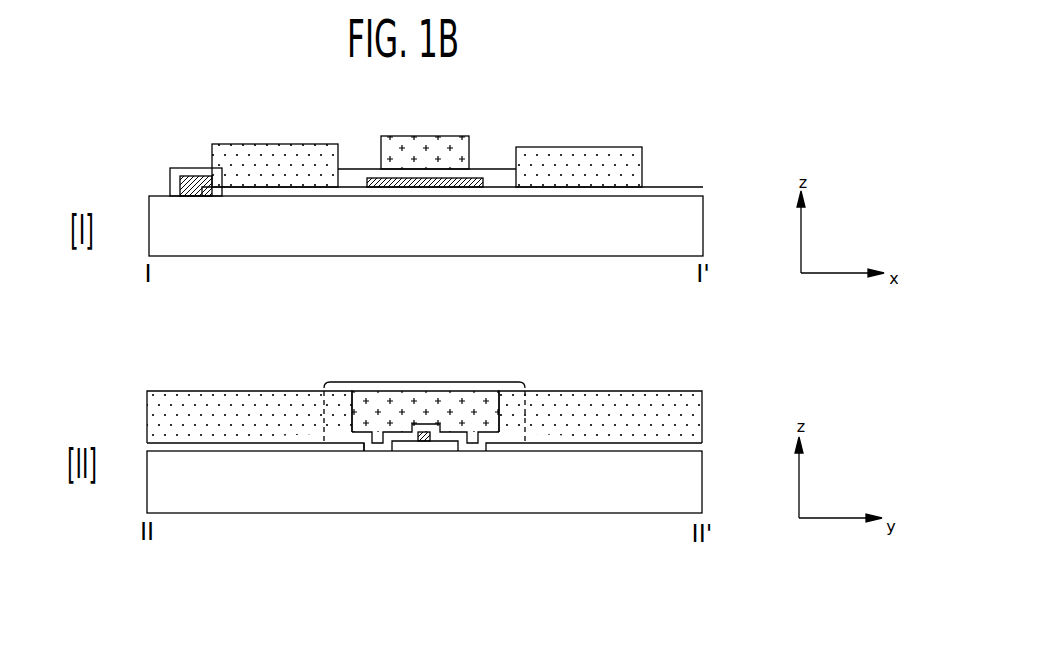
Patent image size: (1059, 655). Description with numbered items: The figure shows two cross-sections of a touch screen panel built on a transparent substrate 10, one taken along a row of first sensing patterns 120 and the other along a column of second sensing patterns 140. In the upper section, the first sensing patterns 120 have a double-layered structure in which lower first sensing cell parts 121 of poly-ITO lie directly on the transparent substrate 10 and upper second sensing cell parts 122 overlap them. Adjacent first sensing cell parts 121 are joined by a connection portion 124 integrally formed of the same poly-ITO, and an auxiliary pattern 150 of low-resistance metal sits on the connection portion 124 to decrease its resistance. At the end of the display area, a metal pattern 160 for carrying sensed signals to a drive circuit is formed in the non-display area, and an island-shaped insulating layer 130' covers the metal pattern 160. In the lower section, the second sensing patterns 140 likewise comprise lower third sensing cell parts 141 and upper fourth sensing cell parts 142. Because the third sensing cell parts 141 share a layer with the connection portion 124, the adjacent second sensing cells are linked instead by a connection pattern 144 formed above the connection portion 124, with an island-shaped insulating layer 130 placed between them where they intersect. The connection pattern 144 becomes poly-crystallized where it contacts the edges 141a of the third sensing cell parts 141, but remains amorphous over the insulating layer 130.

The transparent substrate 10 is at (703, 238).
The first sensing pattern 120 is at (228, 308).
The first sensing cell part 121 is at (288, 188).
The second sensing cell part 122 is at (247, 175).
The connection portion 124 is at (408, 192).
The insulating layer 130 is at (424, 267).
The insulating layer 130' is at (183, 143).
The second sensing pattern 140 is at (180, 562).
The third sensing cell part 141 is at (250, 446).
The edge of (2-1)-th sensing cell 141a is at (338, 447).
The fourth sensing cell part 142 is at (198, 425).
The connection pattern 144 is at (425, 140).
The auxiliary pattern 150 is at (476, 178).
The metal pattern 160 is at (193, 178).